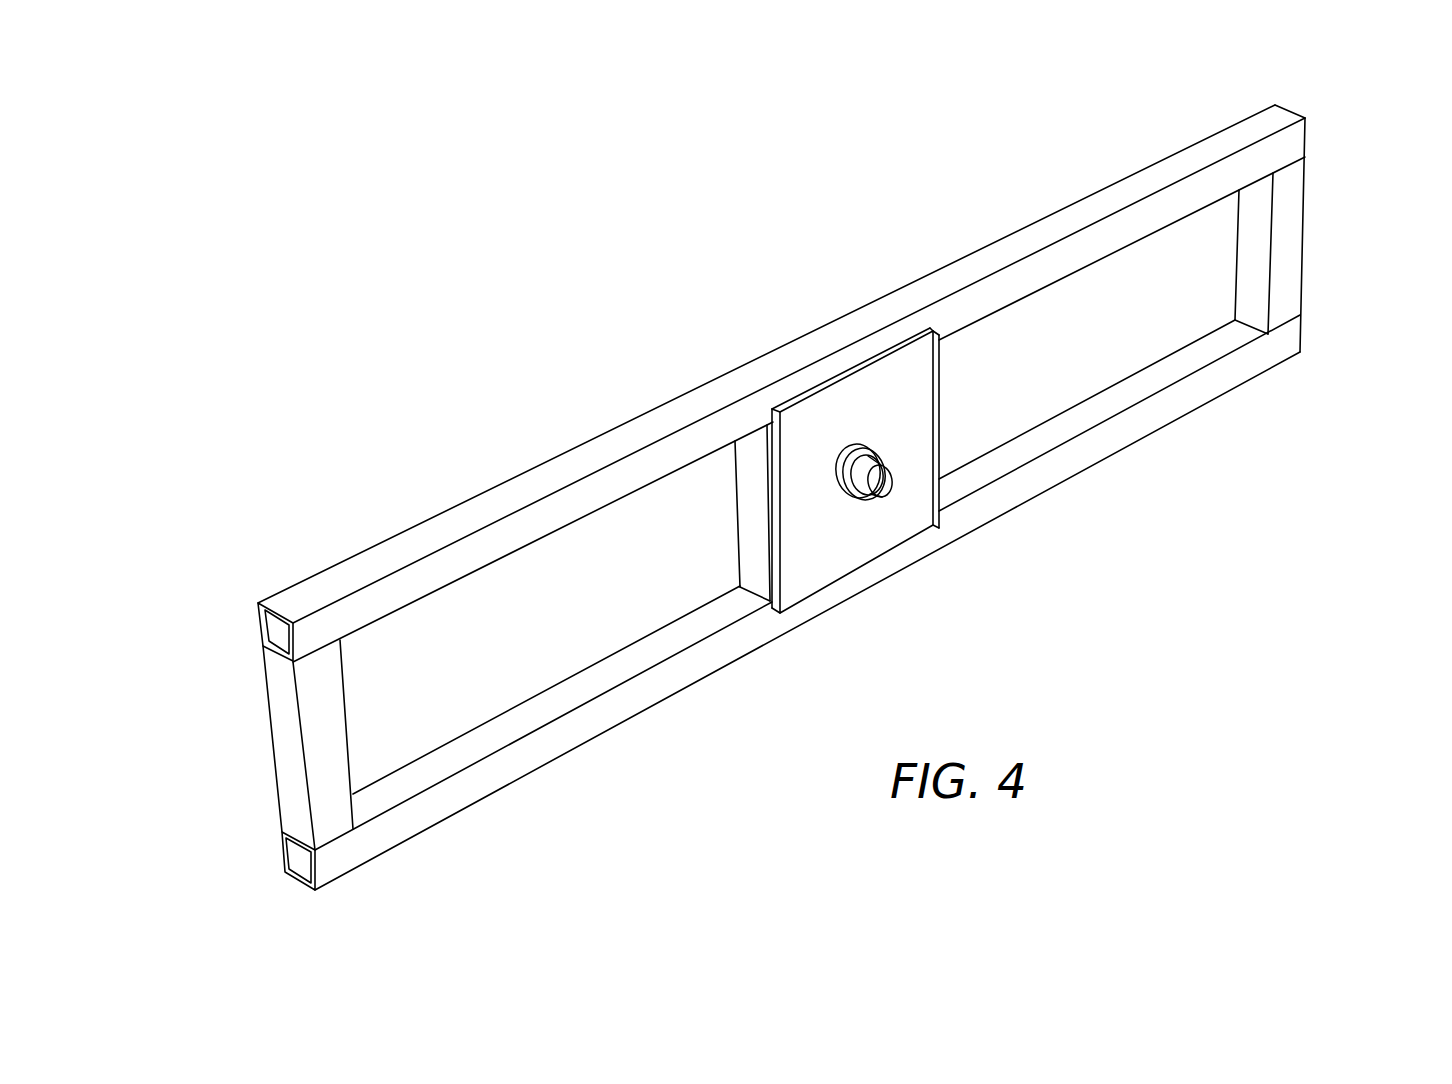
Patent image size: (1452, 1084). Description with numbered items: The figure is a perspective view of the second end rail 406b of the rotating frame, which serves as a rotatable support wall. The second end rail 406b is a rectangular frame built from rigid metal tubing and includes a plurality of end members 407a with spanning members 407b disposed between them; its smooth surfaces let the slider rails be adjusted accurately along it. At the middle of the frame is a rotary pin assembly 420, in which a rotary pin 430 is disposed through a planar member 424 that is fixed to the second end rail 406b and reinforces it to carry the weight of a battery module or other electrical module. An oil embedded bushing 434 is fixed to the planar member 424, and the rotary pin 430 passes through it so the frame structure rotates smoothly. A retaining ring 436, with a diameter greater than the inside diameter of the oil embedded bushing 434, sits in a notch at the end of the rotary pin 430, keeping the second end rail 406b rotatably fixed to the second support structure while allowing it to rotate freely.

The second end rail 406b is at (785, 497).
The end members 407a is at (287, 745).
The spanning members 407b is at (1137, 425).
The rotary pin assembly 420 is at (857, 440).
The planar member 424 is at (830, 557).
The rotary pin 430 is at (880, 483).
The oil embedded bushing 434 is at (838, 446).
The retaining ring 436 is at (897, 455).